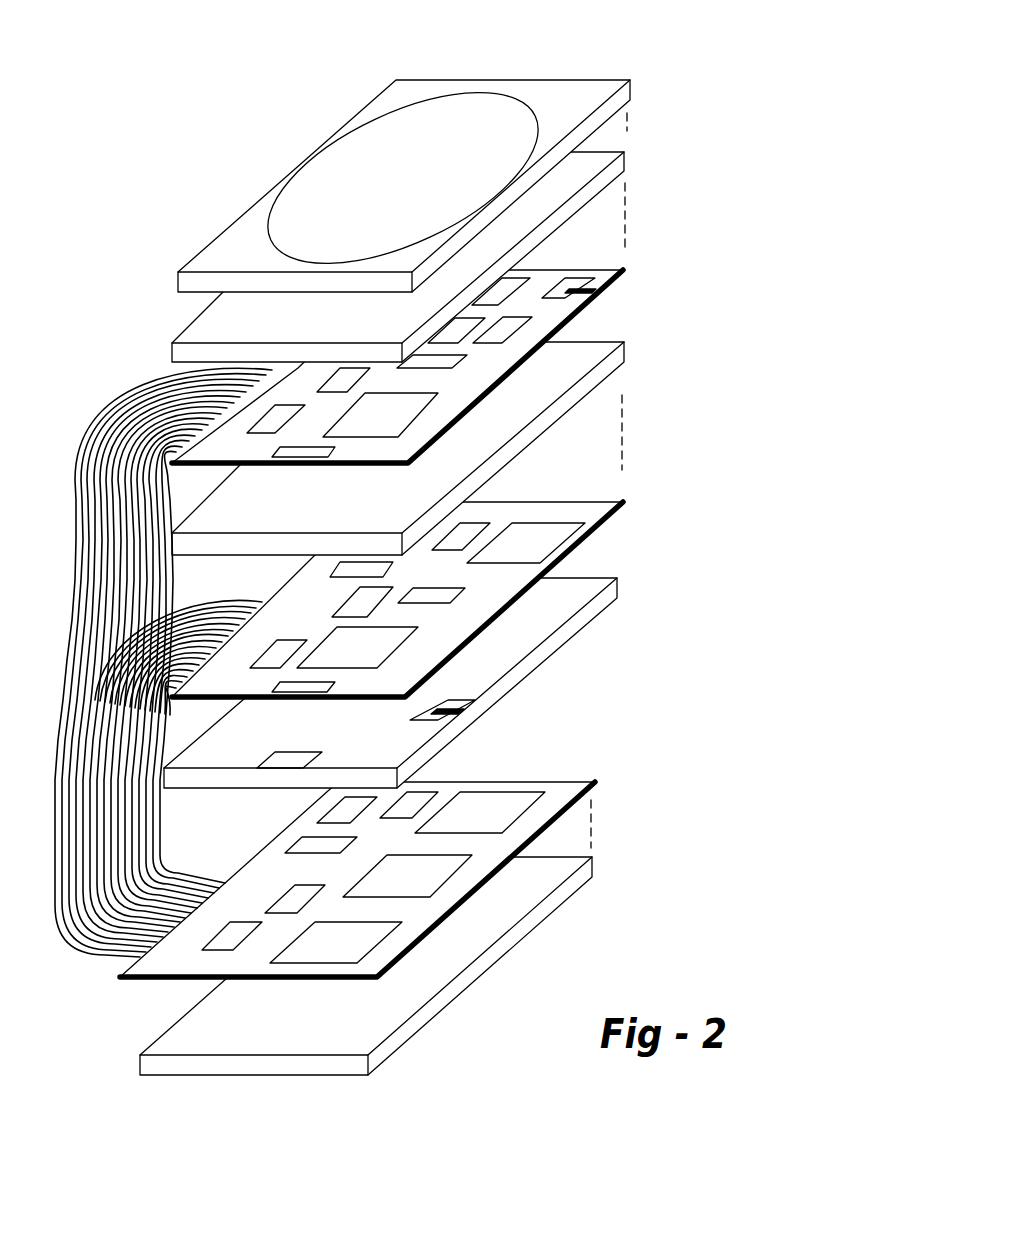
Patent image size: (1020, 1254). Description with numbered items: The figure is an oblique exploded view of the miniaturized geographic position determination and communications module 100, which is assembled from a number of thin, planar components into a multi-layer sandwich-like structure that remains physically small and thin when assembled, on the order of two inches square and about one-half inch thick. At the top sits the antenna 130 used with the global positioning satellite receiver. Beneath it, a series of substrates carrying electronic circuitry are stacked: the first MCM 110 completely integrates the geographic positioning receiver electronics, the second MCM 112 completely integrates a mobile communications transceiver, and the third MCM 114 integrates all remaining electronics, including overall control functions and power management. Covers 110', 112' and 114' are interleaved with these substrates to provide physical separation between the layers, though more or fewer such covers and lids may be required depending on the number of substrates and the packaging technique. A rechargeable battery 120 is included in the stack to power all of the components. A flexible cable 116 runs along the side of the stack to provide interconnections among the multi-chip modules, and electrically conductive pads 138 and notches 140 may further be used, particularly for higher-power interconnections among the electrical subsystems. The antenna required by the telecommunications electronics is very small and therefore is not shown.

The module 100 is at (175, 95).
The antenna 130 is at (580, 95).
The cover 110' is at (483, 236).
The first MCM 110 is at (500, 342).
The cover 112' is at (483, 429).
The second MCM 112 is at (492, 579).
The rechargeable battery 120 is at (616, 578).
The electrically conductive pads 138 is at (308, 690).
The notches 140 is at (470, 708).
The third MCM 114 is at (456, 863).
The cover 114' is at (457, 966).
The flexible cable 116 is at (123, 422).